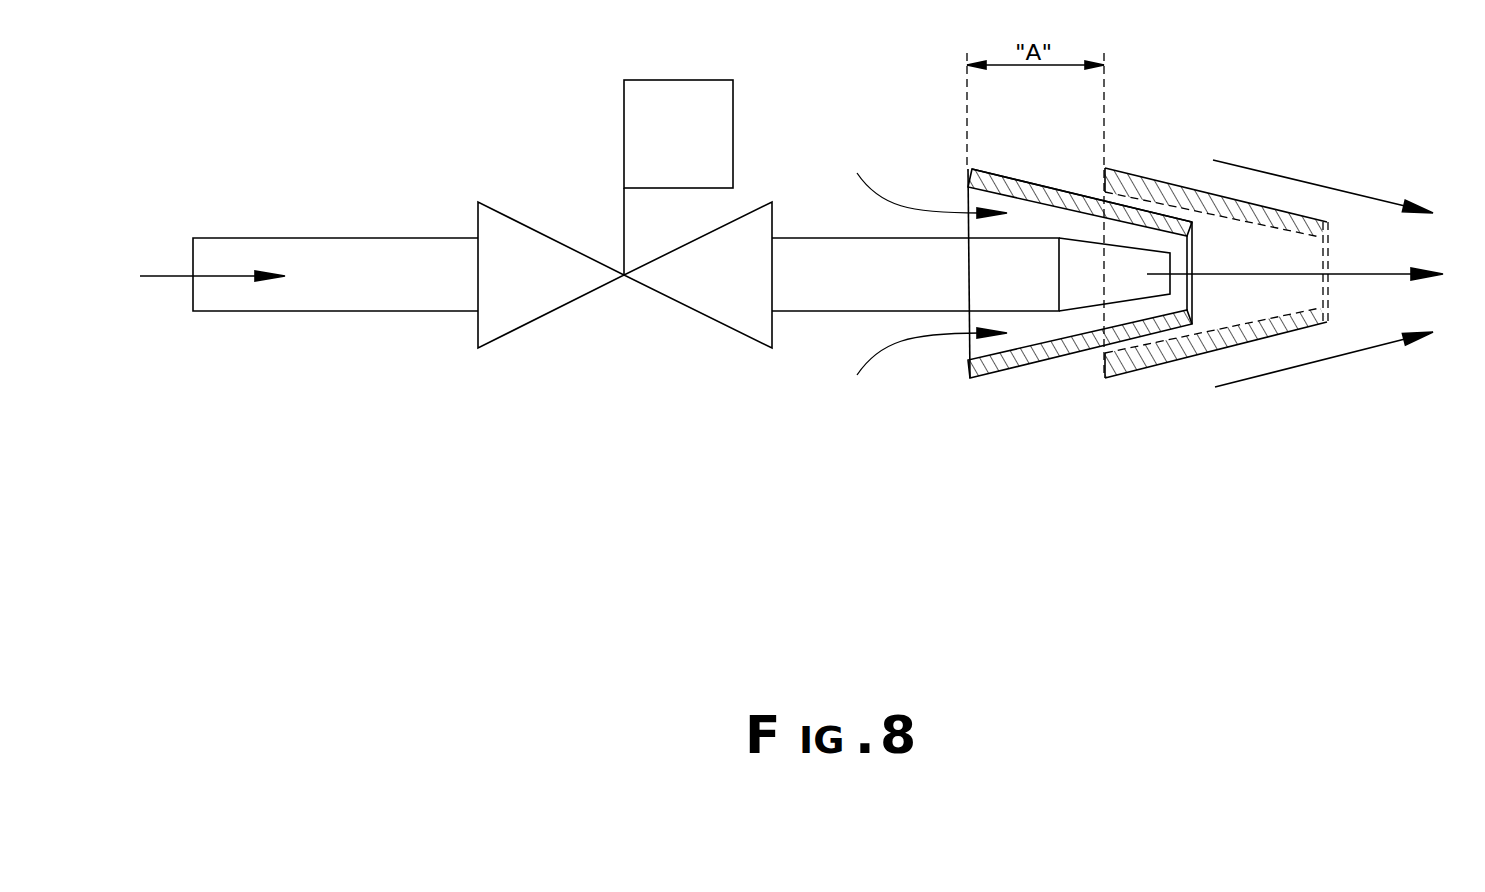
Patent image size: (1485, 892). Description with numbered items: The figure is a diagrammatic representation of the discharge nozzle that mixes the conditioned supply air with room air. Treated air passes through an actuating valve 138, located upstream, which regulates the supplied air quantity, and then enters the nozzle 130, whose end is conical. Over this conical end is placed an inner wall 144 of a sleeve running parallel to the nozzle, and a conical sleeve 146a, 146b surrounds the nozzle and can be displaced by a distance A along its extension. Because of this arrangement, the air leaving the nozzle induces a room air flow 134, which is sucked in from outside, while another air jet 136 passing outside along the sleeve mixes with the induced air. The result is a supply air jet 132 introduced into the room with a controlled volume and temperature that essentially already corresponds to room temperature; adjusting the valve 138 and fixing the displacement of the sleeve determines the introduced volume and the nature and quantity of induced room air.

The nozzle 130 is at (1027, 312).
The supply air jet 132 is at (1388, 270).
The room air flow 134 is at (878, 352).
The air jet 136 is at (1302, 365).
The actuating valve 138 is at (547, 315).
The inner wall 144 is at (1032, 197).
The conical sleeve 146a is at (1073, 353).
The conical sleeve 146b is at (1143, 177).